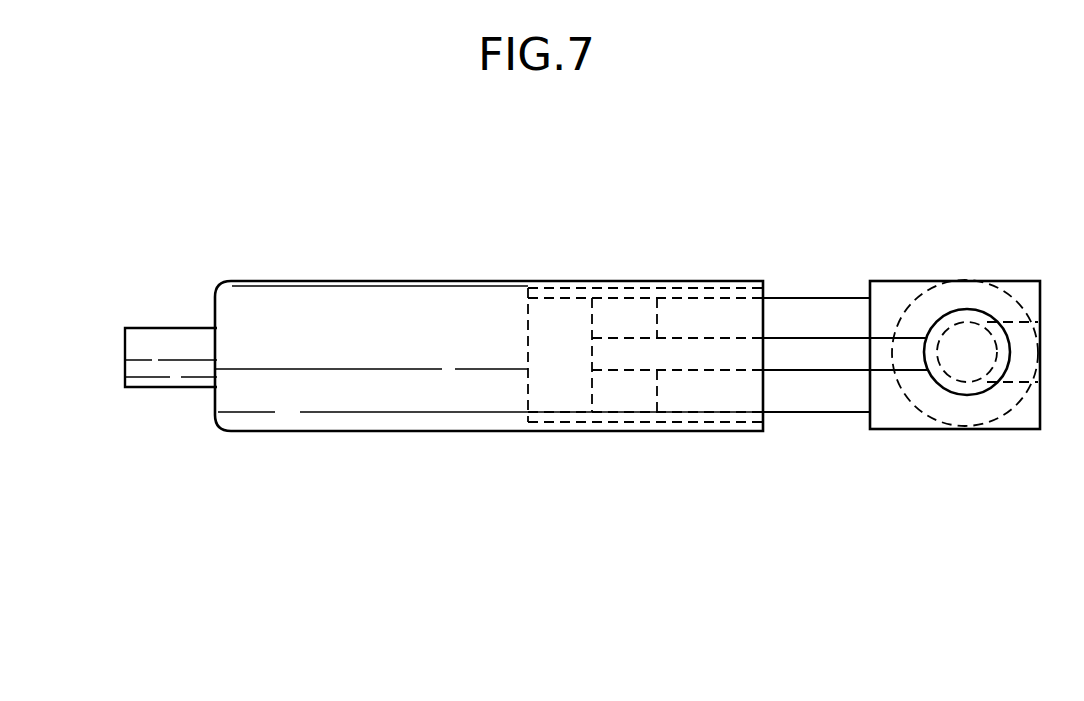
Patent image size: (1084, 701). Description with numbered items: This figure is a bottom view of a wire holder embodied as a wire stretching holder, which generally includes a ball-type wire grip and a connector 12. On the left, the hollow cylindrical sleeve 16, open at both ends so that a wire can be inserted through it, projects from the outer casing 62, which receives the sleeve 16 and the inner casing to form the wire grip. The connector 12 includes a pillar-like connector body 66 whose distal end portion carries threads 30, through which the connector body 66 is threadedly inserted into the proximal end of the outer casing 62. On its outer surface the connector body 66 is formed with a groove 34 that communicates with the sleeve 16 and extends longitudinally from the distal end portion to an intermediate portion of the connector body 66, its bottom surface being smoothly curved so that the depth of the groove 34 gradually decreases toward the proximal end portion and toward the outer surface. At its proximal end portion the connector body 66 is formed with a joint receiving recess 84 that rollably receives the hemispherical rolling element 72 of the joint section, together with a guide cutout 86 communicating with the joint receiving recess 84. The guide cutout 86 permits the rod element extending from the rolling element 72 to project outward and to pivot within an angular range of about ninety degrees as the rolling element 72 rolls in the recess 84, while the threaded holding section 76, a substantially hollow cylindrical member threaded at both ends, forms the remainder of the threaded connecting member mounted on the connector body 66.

The connector 12 is at (837, 432).
The sleeve 16 is at (155, 333).
The threads 30 is at (633, 290).
The groove 34 is at (808, 347).
The outer casing 62 is at (440, 288).
The connector body 66 is at (898, 420).
The hemispherical rolling element 72 is at (998, 290).
The threaded holding section 76 is at (975, 287).
The joint receiving recess 84 is at (945, 312).
The guide cutout 86 is at (1013, 384).